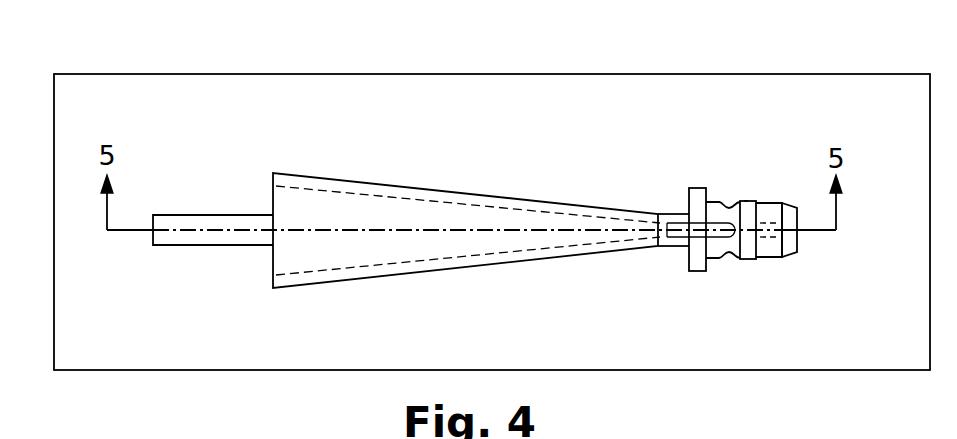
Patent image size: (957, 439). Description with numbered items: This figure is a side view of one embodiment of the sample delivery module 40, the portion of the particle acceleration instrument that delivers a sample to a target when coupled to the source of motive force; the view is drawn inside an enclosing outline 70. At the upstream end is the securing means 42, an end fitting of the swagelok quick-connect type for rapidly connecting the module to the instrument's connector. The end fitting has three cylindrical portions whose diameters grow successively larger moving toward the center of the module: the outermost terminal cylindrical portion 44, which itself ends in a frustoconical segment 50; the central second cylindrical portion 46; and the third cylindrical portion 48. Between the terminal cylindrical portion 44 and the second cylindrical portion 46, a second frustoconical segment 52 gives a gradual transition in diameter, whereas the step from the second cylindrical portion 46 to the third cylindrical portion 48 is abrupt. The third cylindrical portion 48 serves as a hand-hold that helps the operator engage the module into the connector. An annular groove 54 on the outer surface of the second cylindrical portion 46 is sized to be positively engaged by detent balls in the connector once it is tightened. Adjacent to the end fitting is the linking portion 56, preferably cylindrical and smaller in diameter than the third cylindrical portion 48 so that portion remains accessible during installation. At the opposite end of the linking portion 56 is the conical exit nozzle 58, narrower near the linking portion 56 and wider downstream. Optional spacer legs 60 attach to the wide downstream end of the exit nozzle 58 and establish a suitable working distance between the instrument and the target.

The frame / enclosure outline 70 is at (777, 74).
The sample delivery module 40 is at (440, 146).
The spacer legs 60 is at (213, 215).
The conical exit nozzle 58 is at (518, 262).
The linking portion 56 is at (670, 247).
The securing means 42 is at (787, 219).
The third cylindrical portion 48 is at (698, 272).
The annular groove 54 is at (732, 260).
The second cylindrical portion 46 is at (747, 201).
The second frustoconical segment 52 is at (758, 260).
The terminal cylindrical portion 44 is at (773, 252).
The frustoconical segment 50 is at (790, 247).